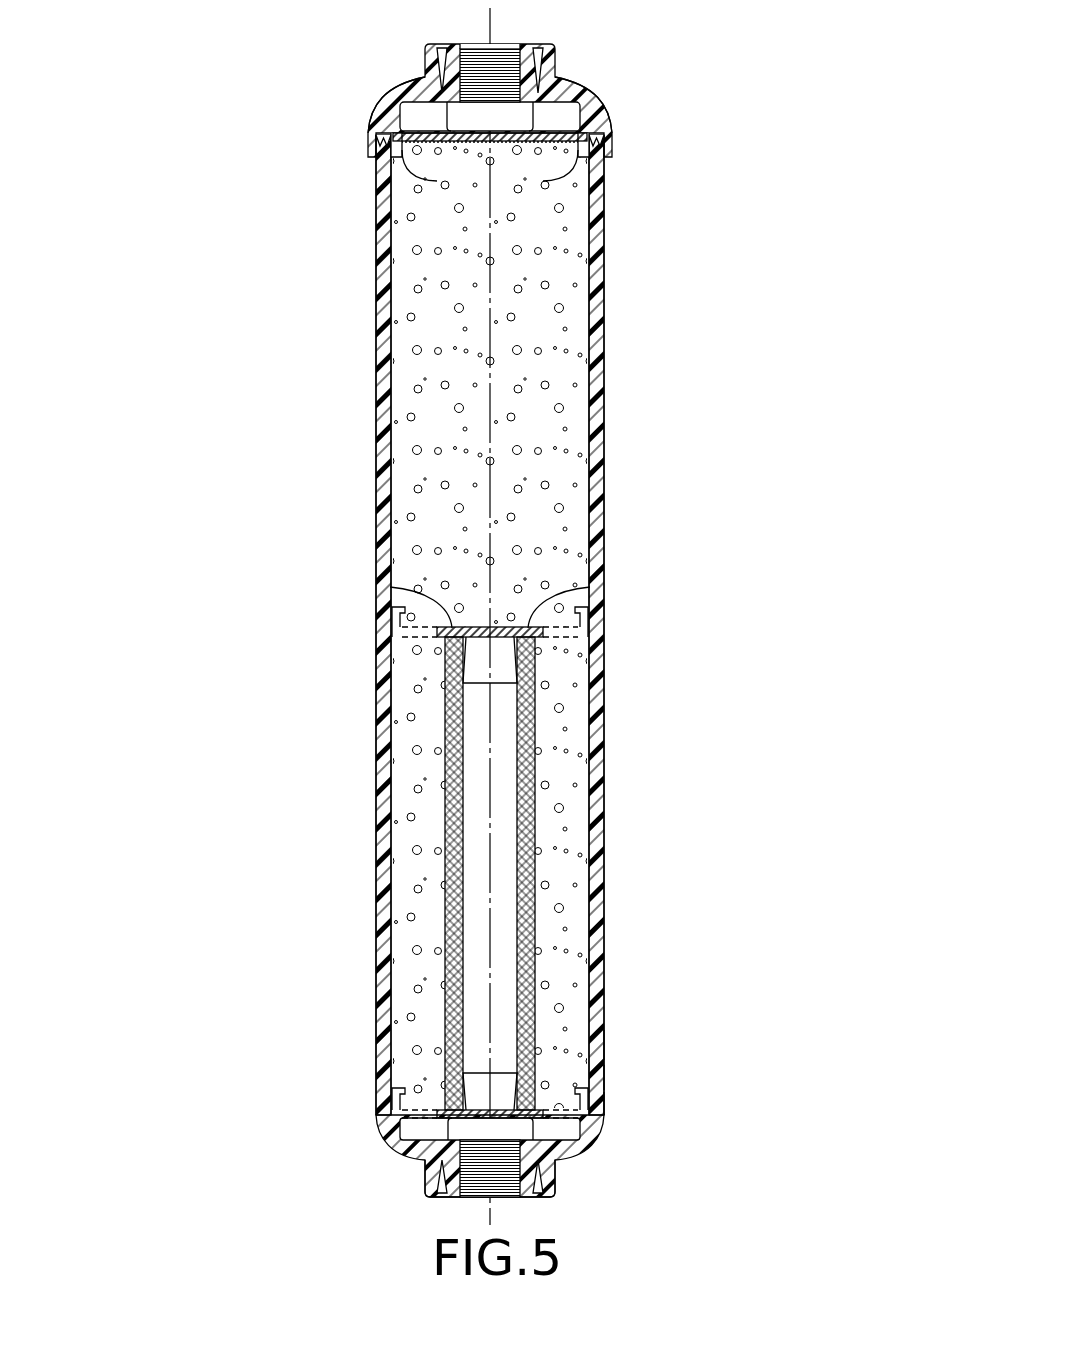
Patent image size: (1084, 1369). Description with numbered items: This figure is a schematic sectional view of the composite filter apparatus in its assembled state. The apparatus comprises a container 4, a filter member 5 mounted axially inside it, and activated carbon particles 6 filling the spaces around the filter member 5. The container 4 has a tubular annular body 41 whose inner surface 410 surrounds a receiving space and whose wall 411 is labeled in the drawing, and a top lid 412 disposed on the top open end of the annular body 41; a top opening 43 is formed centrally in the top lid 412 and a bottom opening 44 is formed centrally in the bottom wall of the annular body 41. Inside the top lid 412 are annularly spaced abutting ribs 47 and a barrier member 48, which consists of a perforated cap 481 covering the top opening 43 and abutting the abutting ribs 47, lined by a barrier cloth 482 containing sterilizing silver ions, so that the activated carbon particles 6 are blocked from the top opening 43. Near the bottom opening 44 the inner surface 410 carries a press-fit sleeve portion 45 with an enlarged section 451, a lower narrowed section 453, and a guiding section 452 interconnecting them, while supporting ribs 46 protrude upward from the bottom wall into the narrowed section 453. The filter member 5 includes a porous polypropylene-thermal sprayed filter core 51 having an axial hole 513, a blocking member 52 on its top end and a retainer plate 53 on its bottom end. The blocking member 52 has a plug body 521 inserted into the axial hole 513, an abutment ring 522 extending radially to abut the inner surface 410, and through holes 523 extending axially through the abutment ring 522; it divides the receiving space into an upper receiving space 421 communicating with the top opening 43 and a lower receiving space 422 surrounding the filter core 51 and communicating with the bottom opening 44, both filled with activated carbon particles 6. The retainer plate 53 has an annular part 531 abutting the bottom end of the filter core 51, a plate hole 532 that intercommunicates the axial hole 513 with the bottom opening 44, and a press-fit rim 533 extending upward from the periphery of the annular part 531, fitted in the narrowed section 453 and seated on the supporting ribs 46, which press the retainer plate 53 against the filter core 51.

The container 4 is at (622, 271).
The annular body 41 is at (582, 625).
The inner surface 410 is at (598, 437).
The inner wall surface of housing 411 is at (598, 343).
The top lid 412 is at (408, 88).
The upper receiving space 421 is at (580, 302).
The lower receiving space 422 is at (588, 852).
The top opening 43 is at (476, 50).
The bottom opening 44 is at (475, 1187).
The press-fit sleeve portion 45 is at (478, 1136).
The enlarged section 451 is at (603, 1038).
The guiding section 452 is at (603, 1078).
The narrowed section 453 is at (602, 1103).
The supporting ribs 46 is at (578, 1138).
The abutting ribs 47 is at (413, 121).
The barrier member 48 is at (490, 103).
The perforated cap 481 is at (378, 148).
The barrier cloth 482 is at (398, 181).
The filter member 5 is at (505, 856).
The filter core 51 is at (414, 873).
The axial hole 513 is at (470, 902).
The blocking member 52 is at (496, 624).
The plug body 521 is at (390, 587).
The abutment ring 522 is at (582, 617).
The through holes 523 is at (392, 610).
The retainer plate 53 is at (513, 1079).
The annular part 531 is at (400, 1115).
The plate hole 532 is at (477, 1077).
The press-fit rim 533 is at (600, 1118).
The activated carbon particles 6 is at (573, 625).